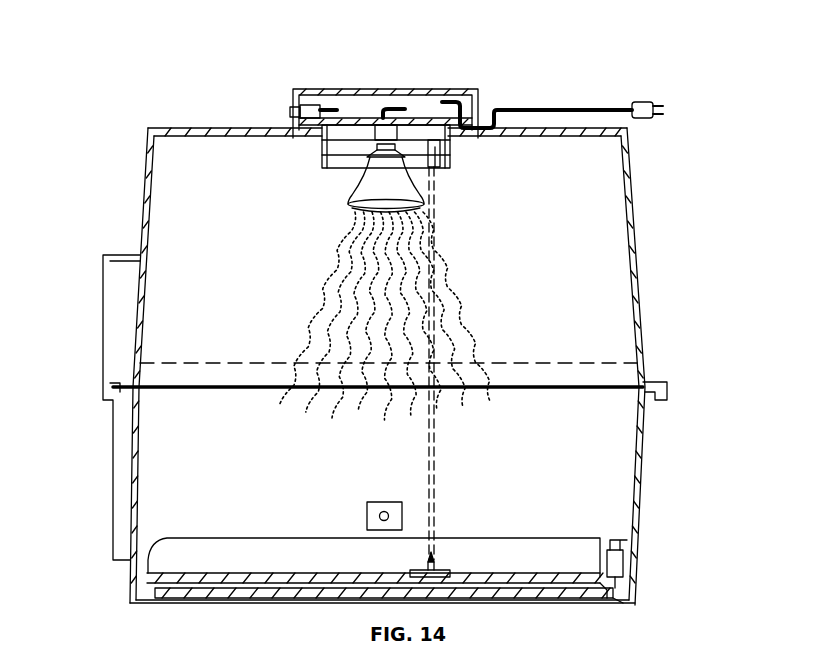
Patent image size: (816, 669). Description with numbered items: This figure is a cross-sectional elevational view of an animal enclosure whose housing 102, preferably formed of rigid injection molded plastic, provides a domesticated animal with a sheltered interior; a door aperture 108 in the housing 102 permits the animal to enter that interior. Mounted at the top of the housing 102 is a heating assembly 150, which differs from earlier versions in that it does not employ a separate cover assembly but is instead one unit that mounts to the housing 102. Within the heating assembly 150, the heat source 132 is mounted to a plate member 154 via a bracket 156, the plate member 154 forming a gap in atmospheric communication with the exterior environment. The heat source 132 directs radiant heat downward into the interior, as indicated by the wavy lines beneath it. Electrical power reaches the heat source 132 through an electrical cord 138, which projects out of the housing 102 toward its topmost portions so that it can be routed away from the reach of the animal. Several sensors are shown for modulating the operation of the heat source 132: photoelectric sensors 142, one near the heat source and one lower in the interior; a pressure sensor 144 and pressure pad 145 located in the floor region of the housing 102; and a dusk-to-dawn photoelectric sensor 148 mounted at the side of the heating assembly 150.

The housing 102 is at (146, 128).
The door aperture 108 is at (69, 383).
The heat source 132 is at (370, 179).
The electrical cord 138 is at (532, 108).
The photoelectric sensor 142 is at (454, 160).
The pressure sensor 144 is at (616, 549).
The pressure pad 145 is at (530, 576).
The dusk-to-dawn photoelectric sensor 148 is at (286, 108).
The heating assembly 150 is at (467, 82).
The plate member 154 is at (333, 88).
The bracket 156 is at (431, 110).